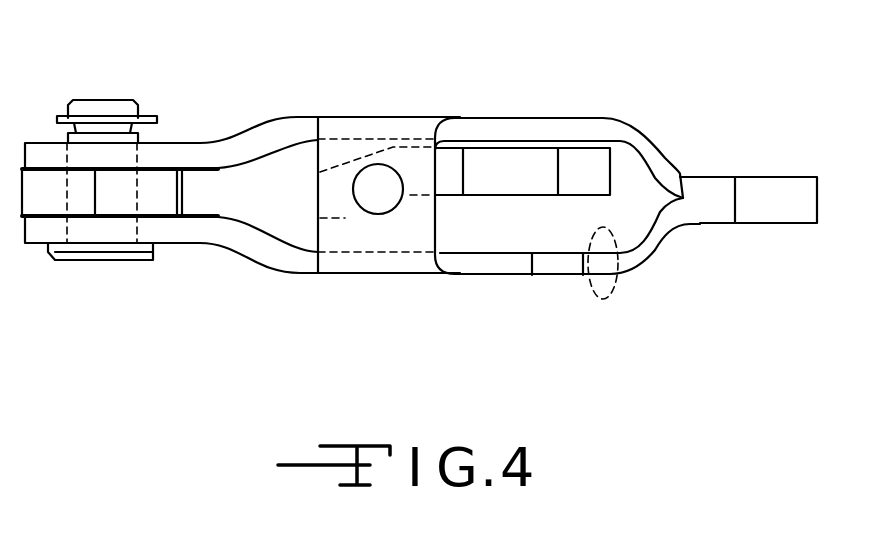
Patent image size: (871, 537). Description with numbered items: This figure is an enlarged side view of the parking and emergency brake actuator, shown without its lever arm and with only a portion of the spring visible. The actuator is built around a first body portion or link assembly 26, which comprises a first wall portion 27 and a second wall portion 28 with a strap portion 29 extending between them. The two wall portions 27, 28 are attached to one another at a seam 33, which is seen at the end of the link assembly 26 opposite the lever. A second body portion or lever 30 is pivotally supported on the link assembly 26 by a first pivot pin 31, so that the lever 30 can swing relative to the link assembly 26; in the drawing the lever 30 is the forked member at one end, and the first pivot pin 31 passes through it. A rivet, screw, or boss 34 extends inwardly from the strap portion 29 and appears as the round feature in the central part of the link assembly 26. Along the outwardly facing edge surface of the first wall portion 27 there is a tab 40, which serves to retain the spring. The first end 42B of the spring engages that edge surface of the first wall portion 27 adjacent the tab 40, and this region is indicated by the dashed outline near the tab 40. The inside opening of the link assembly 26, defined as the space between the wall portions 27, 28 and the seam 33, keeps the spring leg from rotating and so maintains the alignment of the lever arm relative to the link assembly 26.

The link assembly 26 is at (764, 177).
The first wall portion 27 is at (507, 265).
The second wall portion 28 is at (603, 133).
The strap portion 29 is at (337, 147).
The lever 30 is at (243, 195).
The first pivot pin 31 is at (97, 100).
The seam 33 is at (676, 172).
The rivet, screw, or boss 34 is at (377, 193).
The tab 40 is at (562, 265).
The first end of the spring 42B is at (600, 240).